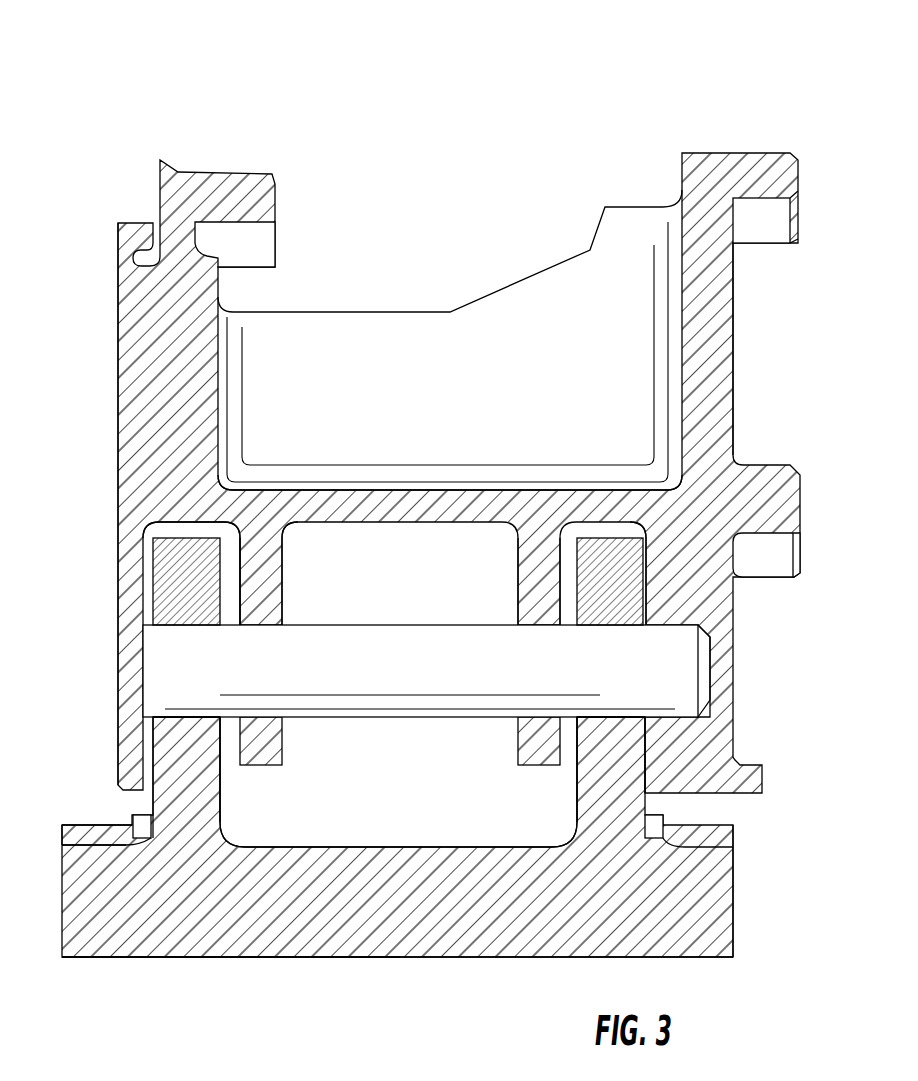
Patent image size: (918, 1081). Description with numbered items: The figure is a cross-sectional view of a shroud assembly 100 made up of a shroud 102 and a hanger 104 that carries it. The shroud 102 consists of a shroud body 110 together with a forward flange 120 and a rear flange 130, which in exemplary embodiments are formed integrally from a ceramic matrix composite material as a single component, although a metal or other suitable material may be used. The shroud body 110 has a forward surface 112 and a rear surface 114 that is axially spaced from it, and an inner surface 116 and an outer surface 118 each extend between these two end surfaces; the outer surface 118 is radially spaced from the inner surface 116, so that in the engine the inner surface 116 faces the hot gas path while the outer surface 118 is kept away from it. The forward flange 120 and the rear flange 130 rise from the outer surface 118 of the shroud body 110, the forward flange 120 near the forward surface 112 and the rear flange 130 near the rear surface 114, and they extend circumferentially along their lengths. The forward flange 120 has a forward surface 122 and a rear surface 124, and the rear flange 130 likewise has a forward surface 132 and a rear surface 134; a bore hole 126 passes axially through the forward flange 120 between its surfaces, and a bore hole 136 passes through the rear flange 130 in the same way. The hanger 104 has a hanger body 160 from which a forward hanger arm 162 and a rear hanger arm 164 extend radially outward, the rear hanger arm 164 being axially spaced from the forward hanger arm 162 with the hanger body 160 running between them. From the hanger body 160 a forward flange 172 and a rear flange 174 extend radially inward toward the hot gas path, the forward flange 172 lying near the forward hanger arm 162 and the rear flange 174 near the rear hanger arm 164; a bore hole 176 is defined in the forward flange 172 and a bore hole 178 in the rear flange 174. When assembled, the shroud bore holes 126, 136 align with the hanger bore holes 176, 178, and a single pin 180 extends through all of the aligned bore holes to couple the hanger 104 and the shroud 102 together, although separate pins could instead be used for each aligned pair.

The shroud assembly 100 is at (412, 519).
The shroud 102 is at (163, 967).
The hanger 104 is at (105, 442).
The shroud body 110 is at (395, 903).
The forward surface 112 is at (62, 895).
The rear surface 114 is at (733, 905).
The inner surface 116 is at (275, 958).
The outer surface 118 is at (412, 843).
The forward flange 120 is at (182, 790).
The forward surface 122 is at (153, 590).
The rear surface 124 is at (222, 612).
The bore hole 126 is at (172, 727).
The rear flange 130 is at (623, 790).
The forward surface 132 is at (647, 568).
The rear surface 134 is at (577, 597).
The bore hole 136 is at (633, 723).
The hanger body 160 is at (352, 510).
The forward hanger arm 162 is at (160, 352).
The rear hanger arm 164 is at (708, 350).
The forward flange 172 is at (263, 558).
The rear flange 174 is at (537, 550).
The bore hole 176 is at (287, 723).
The bore hole 178 is at (512, 727).
The pin 180 is at (678, 676).